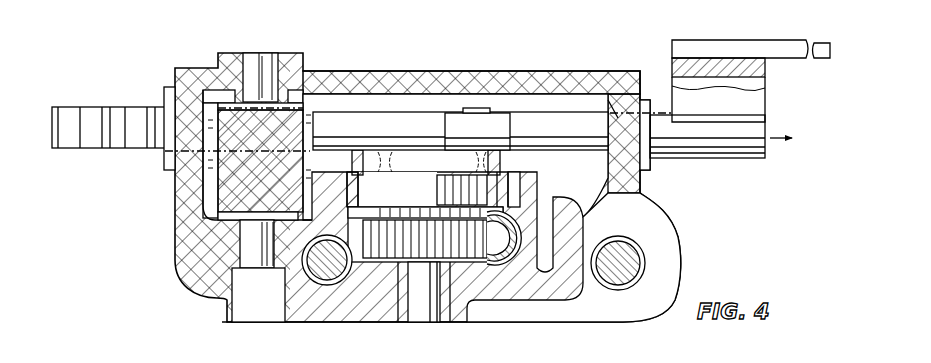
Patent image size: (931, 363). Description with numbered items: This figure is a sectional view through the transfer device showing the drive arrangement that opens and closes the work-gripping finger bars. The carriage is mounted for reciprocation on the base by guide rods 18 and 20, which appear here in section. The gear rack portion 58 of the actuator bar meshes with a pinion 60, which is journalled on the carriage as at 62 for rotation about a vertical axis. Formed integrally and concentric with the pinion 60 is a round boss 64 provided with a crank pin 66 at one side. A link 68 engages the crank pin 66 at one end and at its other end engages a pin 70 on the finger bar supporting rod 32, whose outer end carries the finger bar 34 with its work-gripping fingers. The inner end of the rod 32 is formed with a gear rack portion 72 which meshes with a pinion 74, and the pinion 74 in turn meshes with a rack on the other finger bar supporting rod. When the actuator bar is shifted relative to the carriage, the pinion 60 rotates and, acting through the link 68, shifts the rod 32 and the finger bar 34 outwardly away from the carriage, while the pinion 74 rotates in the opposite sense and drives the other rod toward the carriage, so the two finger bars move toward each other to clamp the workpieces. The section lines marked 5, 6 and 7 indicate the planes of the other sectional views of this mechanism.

The section line 5-5 (mounting bolt) 5 is at (263, 100).
The section line 6- 6 is at (338, 155).
The section line 7- 7 is at (442, 102).
The guide rod 18 is at (333, 284).
The guide rod 20 is at (633, 255).
The rod 32 is at (727, 160).
The finger bar 34 is at (767, 70).
The gear rack portion 58 is at (522, 226).
The pinion 60 is at (468, 258).
The journal 62 is at (433, 324).
The round boss 64 is at (448, 201).
The crank pin 66 is at (363, 189).
The link 68 is at (392, 172).
The pin 70 is at (487, 152).
The gear rack portion 72 is at (115, 143).
The pinion 74 is at (210, 192).